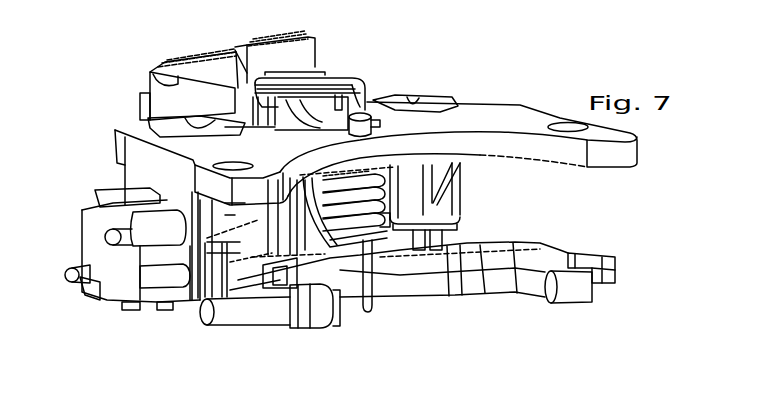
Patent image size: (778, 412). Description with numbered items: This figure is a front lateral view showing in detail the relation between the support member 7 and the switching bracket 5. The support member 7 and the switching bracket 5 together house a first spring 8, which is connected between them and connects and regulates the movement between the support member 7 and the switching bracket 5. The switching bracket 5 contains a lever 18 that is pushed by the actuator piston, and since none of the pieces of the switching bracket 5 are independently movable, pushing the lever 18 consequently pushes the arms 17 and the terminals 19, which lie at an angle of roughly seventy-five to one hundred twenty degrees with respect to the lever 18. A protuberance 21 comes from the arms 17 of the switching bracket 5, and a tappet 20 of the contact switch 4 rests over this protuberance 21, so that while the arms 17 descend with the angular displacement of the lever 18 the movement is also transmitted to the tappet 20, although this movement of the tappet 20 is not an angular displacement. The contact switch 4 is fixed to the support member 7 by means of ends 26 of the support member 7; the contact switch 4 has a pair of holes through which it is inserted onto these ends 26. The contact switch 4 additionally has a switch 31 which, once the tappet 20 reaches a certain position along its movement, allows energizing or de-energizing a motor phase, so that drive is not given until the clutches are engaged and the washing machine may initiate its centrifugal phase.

The support member 7 is at (463, 82).
The contact switch 4 is at (112, 255).
The ends 26 is at (107, 233).
The switch 31 is at (143, 303).
The tappet 20 is at (172, 303).
The protuberance 21 is at (228, 312).
The terminals 19 is at (336, 314).
The lever 18 is at (288, 242).
The switching bracket 5 is at (383, 317).
The first spring 8 is at (372, 210).
The arms 17 is at (558, 253).